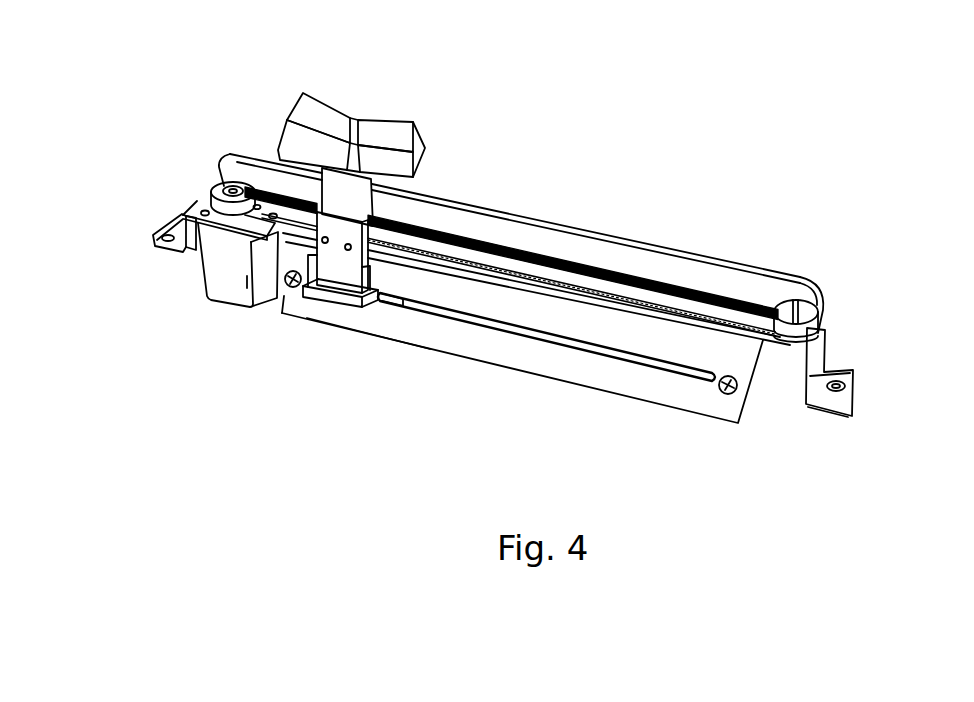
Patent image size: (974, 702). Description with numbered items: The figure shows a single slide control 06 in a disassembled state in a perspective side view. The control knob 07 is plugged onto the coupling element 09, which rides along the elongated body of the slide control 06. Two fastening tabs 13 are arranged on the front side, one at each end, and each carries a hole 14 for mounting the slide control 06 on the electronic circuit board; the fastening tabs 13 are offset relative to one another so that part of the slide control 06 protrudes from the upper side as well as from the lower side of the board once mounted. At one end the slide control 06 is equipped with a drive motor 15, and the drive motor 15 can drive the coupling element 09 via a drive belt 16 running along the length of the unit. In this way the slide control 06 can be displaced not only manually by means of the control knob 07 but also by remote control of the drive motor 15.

The slide control 06 is at (768, 112).
The control knob 07 is at (385, 132).
The coupling element 09 is at (348, 203).
The fastening tabs 13 is at (195, 240).
The holes 14 is at (173, 233).
The drive motor 15 is at (265, 293).
The drive belt 16 is at (670, 280).